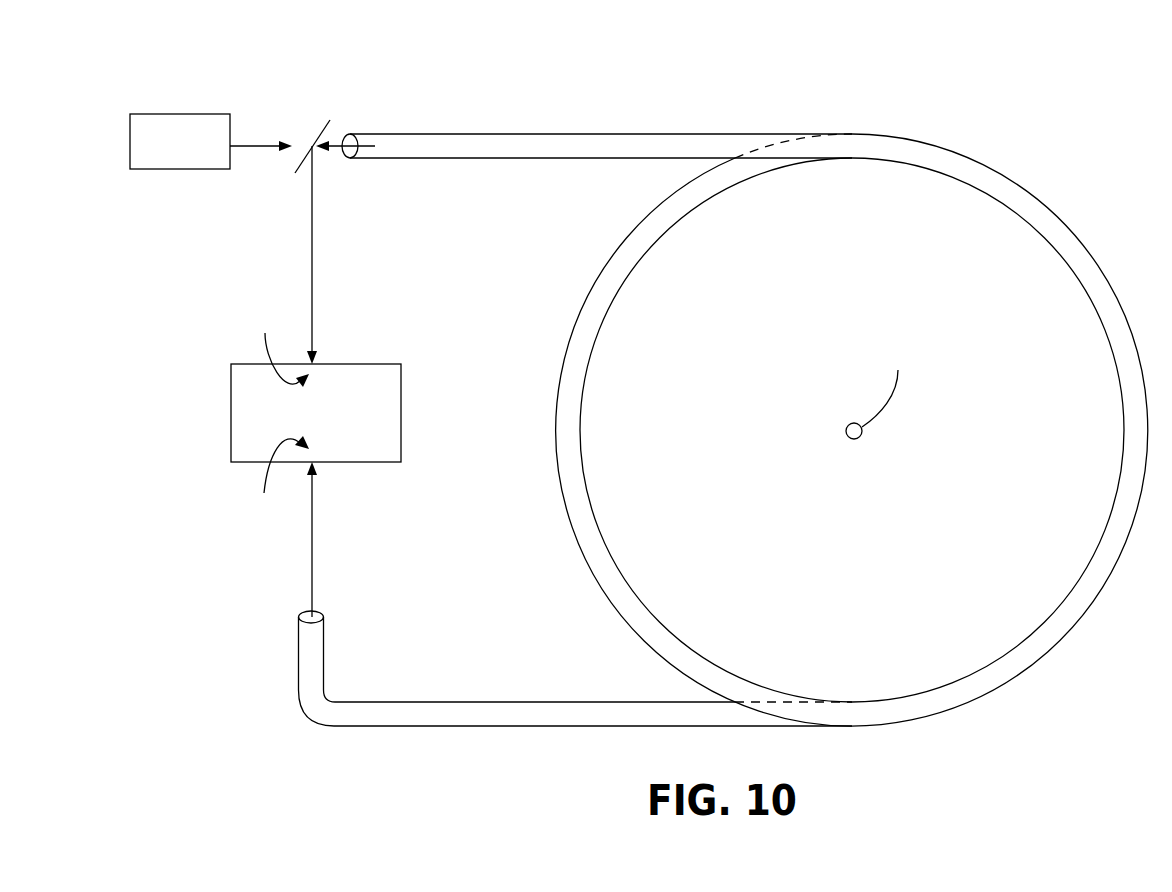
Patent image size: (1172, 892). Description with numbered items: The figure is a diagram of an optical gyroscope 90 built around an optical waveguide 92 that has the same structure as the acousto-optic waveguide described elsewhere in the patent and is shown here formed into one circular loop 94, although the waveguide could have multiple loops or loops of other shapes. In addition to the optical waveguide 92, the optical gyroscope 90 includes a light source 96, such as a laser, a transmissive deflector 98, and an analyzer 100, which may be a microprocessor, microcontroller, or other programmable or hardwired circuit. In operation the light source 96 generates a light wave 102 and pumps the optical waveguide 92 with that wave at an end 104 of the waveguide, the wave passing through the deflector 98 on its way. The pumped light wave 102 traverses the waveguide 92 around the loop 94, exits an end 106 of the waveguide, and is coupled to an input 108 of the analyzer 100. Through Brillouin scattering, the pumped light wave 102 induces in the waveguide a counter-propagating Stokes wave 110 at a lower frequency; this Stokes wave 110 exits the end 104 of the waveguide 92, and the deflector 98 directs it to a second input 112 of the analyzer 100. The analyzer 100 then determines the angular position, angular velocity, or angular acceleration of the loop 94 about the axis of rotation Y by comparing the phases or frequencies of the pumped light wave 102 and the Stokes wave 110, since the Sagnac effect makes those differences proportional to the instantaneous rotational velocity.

The optical gyroscope 90 is at (1086, 136).
The optical waveguide 92 is at (1098, 258).
The circular loop 94 is at (869, 98).
The light source 96 is at (158, 113).
The transmissive deflector 98 is at (325, 128).
The analyzer 100 is at (365, 364).
The light wave 102 is at (244, 145).
The end of the optical waveguide 104 is at (352, 160).
The end of the waveguide 106 is at (326, 616).
The input of the analyzer 108 is at (276, 478).
The Stokes wave 110 is at (313, 260).
The input of the analyzer 112 is at (275, 347).